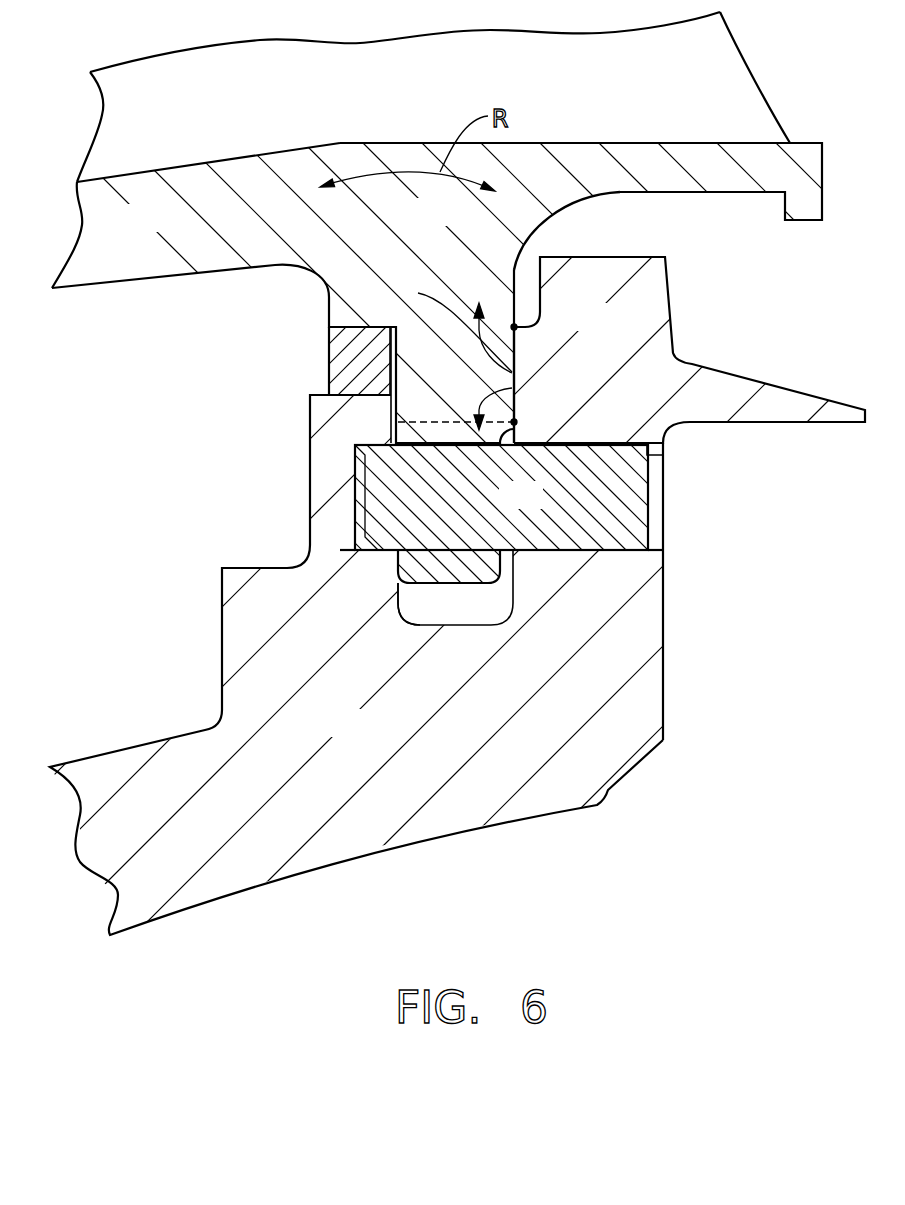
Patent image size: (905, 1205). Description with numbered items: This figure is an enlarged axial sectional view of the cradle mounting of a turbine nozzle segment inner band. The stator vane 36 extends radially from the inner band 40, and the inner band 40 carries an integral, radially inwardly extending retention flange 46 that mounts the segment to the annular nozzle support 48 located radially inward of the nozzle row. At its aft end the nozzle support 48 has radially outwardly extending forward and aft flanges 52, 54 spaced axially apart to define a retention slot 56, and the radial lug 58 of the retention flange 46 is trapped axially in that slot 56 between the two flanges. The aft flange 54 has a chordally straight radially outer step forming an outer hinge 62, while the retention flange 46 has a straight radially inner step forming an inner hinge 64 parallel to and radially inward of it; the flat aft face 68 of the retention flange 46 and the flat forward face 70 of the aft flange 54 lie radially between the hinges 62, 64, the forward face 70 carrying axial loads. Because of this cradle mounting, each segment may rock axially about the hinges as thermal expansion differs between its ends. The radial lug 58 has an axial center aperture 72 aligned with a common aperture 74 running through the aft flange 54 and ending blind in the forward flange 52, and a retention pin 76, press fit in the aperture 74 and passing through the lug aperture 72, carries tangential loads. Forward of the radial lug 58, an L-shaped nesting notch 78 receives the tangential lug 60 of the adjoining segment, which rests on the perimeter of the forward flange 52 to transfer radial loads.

The stator vane 36 is at (355, 102).
The inner band 40 is at (124, 232).
The retention flange 46 is at (416, 226).
The nozzle support 48 is at (324, 736).
The forward flange 52 is at (310, 458).
The aft flange 54 is at (577, 330).
The retention slot 56 is at (443, 614).
The radial lug 58 is at (428, 583).
The tangential lug 60 is at (329, 373).
The outer hinge 62 is at (514, 327).
The inner hinge 64 is at (514, 422).
The aft face 68 is at (514, 405).
The forward face 70 is at (446, 355).
The lug aperture 72 is at (423, 547).
The supporting aperture 74 is at (665, 548).
The retention pin 76 is at (505, 508).
The nesting notch 78 is at (356, 360).